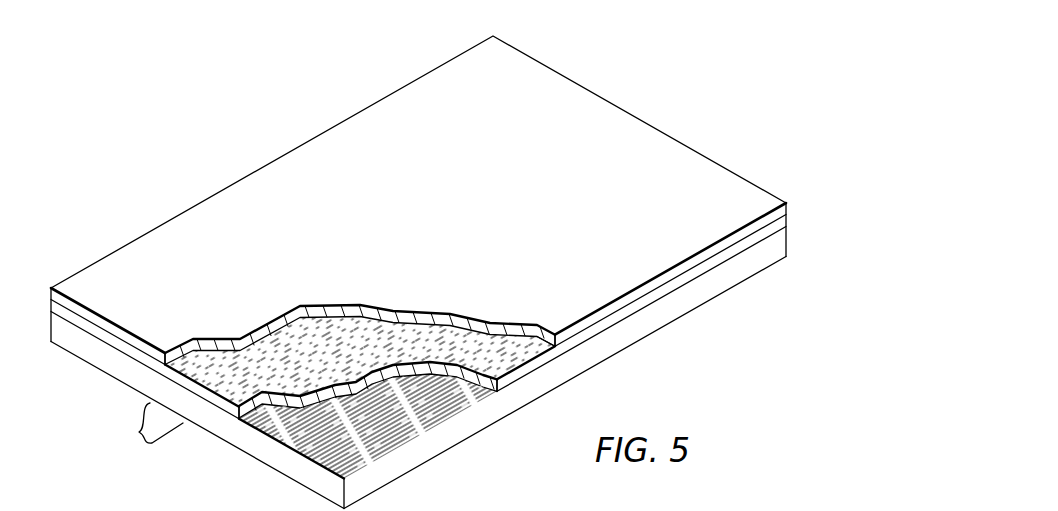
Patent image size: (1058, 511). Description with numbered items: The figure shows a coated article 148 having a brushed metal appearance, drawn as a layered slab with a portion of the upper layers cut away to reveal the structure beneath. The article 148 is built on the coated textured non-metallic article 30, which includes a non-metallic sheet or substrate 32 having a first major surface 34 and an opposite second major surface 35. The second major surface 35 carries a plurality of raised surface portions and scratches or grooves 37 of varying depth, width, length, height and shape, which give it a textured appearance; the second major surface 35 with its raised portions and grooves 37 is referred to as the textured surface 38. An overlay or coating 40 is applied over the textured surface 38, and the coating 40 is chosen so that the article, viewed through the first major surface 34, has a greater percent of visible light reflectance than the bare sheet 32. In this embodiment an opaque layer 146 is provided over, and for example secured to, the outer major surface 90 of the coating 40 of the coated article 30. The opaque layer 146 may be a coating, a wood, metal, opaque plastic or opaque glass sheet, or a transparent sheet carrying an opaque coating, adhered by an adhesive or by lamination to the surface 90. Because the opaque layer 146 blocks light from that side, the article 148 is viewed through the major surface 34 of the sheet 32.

The opaque layer 146 is at (541, 87).
The coated article 148 is at (661, 83).
The non-metallic sheet 32 is at (705, 288).
The first major surface 34 is at (667, 330).
The coating 40 is at (140, 356).
The coated textured non-metallic article 30 is at (148, 425).
The second major surface 35 is at (211, 386).
The textured surface 38 is at (298, 445).
The raised surface portions and grooves 37 is at (360, 427).
The outer major surface of the coating 90 is at (516, 357).